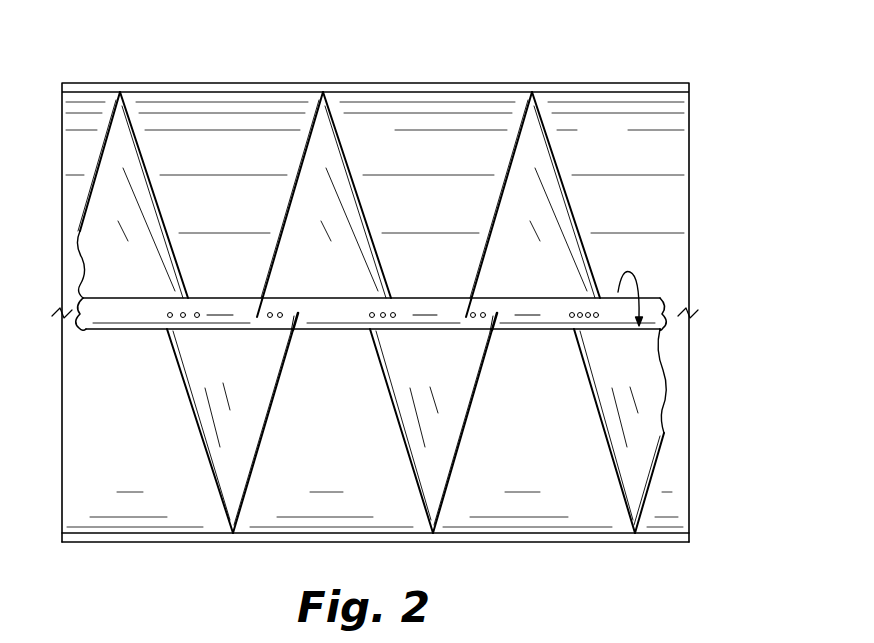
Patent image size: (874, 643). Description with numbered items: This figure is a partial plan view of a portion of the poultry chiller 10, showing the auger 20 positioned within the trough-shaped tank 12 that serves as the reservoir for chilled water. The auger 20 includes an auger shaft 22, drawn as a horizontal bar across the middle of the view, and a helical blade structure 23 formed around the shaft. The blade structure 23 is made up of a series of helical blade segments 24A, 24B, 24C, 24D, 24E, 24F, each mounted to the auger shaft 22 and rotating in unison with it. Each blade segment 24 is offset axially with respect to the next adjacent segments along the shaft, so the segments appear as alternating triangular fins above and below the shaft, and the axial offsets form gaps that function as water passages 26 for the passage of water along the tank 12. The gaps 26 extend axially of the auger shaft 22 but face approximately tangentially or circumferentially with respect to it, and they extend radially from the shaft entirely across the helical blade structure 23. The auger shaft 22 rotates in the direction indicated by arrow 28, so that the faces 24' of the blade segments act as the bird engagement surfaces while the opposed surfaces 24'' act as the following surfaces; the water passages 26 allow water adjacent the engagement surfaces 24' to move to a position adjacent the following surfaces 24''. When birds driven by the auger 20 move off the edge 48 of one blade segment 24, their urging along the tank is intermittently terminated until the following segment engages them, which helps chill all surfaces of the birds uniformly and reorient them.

The poultry chiller 10 is at (111, 61).
The tank 12 is at (601, 549).
The auger 20 is at (560, 155).
The auger shaft 22 is at (137, 301).
The helical blade structure 23 is at (517, 115).
The auger blade segment 24 is at (185, 431).
The bird engagement surface 24' is at (377, 214).
The following surface 24'' is at (379, 426).
The helical blade segment 24A is at (622, 465).
The helical blade segment 24B is at (557, 217).
The helical blade segment 24C is at (466, 431).
The helical blade segment 24D is at (372, 222).
The helical blade segment 24E is at (262, 428).
The helical blade segment 24F is at (177, 247).
The water passages 26 is at (283, 311).
The arrow 28 is at (641, 284).
The edge 48 is at (301, 316).